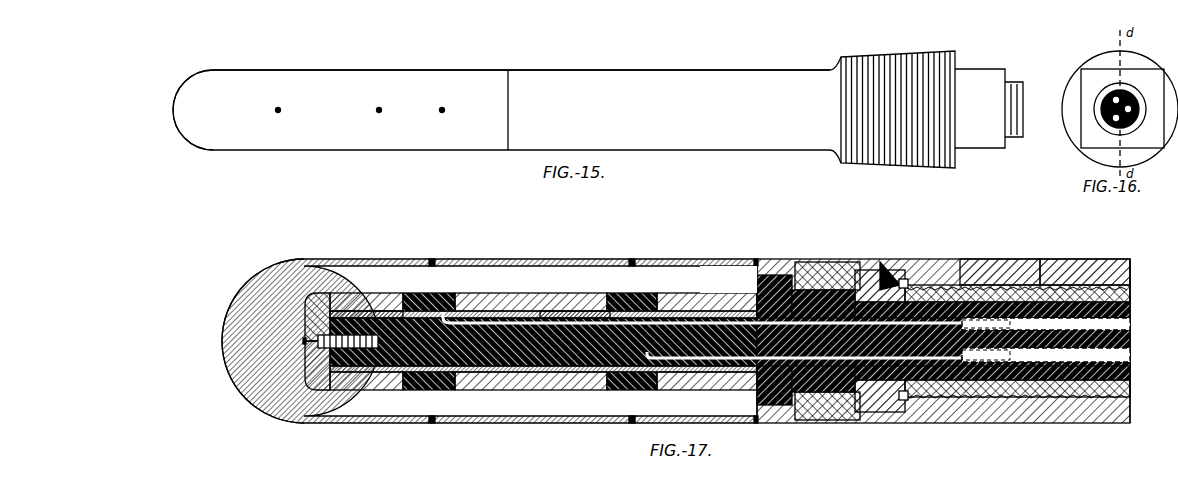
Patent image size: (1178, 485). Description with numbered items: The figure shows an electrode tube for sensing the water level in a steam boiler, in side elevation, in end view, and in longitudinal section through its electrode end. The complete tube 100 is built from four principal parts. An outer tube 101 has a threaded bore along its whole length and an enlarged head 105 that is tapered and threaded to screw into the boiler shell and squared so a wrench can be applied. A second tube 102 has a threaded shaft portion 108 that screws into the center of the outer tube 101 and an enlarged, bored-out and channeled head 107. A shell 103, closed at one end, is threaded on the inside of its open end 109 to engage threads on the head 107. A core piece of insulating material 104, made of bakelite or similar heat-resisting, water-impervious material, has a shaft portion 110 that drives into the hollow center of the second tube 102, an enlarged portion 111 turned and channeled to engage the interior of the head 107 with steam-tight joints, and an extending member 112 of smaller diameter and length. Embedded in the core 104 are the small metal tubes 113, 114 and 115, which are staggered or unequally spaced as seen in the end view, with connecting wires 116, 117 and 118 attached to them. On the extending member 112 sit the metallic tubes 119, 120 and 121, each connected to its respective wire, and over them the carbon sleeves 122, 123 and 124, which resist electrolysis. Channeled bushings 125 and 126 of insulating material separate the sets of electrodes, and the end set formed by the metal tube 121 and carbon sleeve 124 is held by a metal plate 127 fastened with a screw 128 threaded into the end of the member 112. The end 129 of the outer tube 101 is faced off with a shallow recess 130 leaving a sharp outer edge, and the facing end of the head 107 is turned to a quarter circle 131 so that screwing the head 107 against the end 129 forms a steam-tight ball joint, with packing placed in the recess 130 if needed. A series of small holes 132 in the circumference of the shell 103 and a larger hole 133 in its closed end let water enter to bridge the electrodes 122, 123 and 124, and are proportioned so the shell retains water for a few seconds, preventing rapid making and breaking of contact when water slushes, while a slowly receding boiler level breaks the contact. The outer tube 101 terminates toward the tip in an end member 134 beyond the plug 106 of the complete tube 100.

In FIG. 15, the complete tube 100 is at (507, 110).
In FIG. 15, the outer tube 101 is at (633, 68).
In FIG. 17, the outer tube 101 is at (978, 423).
In FIG. 17, the second tube 102 is at (1060, 413).
In FIG. 15, the shell 103 is at (370, 68).
In FIG. 17, the shell 103 is at (548, 258).
In FIG. 16, the core piece of insulating material 104 is at (1108, 106).
In FIG. 17, the core piece of insulating material 104 is at (1063, 272).
In FIG. 15, the enlarged head 105 is at (928, 40).
In FIG. 16, the enlarged head 105 is at (1099, 57).
In FIG. 15, the plug 106 is at (1000, 59).
In FIG. 16, the plug 106 is at (1129, 97).
In FIG. 17, the head of second tube 107 is at (858, 275).
In FIG. 17, the shaft portion 108 is at (980, 268).
In FIG. 17, the open end of shell 109 is at (825, 270).
In FIG. 17, the shaft portion of core 110 is at (1010, 290).
In FIG. 17, the enlarged portion of core 111 is at (801, 268).
In FIG. 17, the extending member 112 is at (313, 389).
In FIG. 16, the metal tube 113 is at (1114, 97).
In FIG. 17, the metal tube 113 is at (1046, 325).
In FIG. 16, the metal tube 114 is at (1131, 112).
In FIG. 16, the metal tube 115 is at (1114, 121).
In FIG. 17, the metal tube 115 is at (1046, 356).
In FIG. 17, the connecting wire 116 is at (510, 327).
In FIG. 17, the connecting wire 117 is at (385, 391).
In FIG. 17, the connecting wire 118 is at (725, 391).
In FIG. 17, the metallic tube 119 is at (726, 292).
In FIG. 17, the metallic tube 120 is at (563, 300).
In FIG. 17, the metallic tube 121 is at (378, 293).
In FIG. 17, the carbon sleeve 122 is at (664, 294).
In FIG. 17, the carbon sleeve 123 is at (470, 294).
In FIG. 17, the carbon sleeve 124 is at (333, 294).
In FIG. 17, the channeled bushing 125 is at (614, 294).
In FIG. 17, the channeled bushing 126 is at (410, 294).
In FIG. 17, the metal plate 127 is at (308, 312).
In FIG. 17, the screw 128 is at (303, 345).
In FIG. 15, the end of outer tube 129 is at (505, 156).
In FIG. 17, the end of outer tube 129 is at (893, 268).
In FIG. 17, the shallow recess 130 is at (940, 254).
In FIG. 17, the quarter circle 131 is at (906, 279).
In FIG. 15, the small holes 132 is at (437, 110).
In FIG. 17, the small holes 132 is at (430, 262).
In FIG. 15, the larger hole 133 is at (173, 113).
In FIG. 17, the larger hole 133 is at (222, 343).
In FIG. 15, the tip 134 is at (1010, 142).
In FIG. 16, the tip 134 is at (1097, 117).